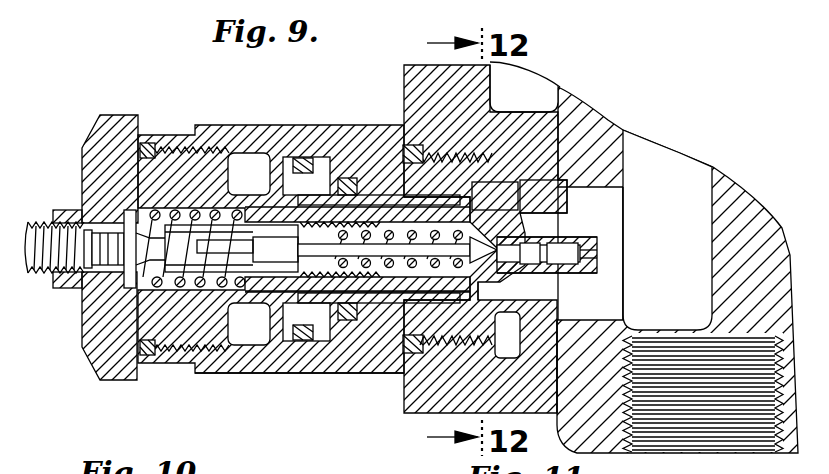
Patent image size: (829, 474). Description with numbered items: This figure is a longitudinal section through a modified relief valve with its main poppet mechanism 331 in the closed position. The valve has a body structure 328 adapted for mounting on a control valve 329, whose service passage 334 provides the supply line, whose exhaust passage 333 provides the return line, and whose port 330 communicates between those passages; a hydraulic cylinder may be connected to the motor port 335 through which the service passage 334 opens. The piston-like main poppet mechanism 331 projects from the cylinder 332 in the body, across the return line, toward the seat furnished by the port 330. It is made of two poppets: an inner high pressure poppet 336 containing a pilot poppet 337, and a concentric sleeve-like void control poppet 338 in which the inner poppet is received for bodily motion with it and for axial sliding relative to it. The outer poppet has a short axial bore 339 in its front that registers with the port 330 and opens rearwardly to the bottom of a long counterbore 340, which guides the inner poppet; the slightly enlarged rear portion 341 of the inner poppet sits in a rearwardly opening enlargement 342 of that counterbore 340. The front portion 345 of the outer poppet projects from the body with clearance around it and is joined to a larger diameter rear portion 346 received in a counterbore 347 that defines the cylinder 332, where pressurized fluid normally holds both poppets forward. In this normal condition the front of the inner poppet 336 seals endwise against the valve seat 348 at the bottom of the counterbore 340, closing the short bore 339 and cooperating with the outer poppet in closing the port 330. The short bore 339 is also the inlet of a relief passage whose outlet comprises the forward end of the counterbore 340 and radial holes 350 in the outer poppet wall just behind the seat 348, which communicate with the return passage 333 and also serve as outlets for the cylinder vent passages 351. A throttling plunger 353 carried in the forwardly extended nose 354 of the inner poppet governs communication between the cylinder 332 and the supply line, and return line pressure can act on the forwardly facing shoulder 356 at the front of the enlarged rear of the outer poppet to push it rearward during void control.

The body structure 328 is at (206, 100).
The control valve 329 is at (406, 78).
The port 330 is at (608, 200).
The main poppet mechanism 331 is at (325, 158).
The cylinder 332 is at (245, 155).
The exhaust passage 333 is at (530, 120).
The service passage 334 is at (668, 163).
The motor port 335 is at (697, 420).
The high pressure poppet 336 is at (388, 305).
The pilot poppet 337 is at (492, 232).
The void control poppet 338 is at (400, 317).
The short axial bore 339 is at (567, 271).
The counterbore 340 is at (357, 217).
The enlarged rear portion 341 is at (278, 194).
The rearwardly opening enlargement 342 is at (270, 308).
The front portion 345 is at (568, 375).
The rear portion 346 is at (332, 343).
The counterbore 347 is at (248, 335).
The valve seat 348 is at (508, 333).
The radial holes 350 is at (505, 186).
The cylinder vent passages 351 is at (377, 196).
The throttling plunger 353 is at (600, 253).
The forwardly extended nose 354 is at (590, 234).
The forwardly facing shoulder 356 is at (367, 322).